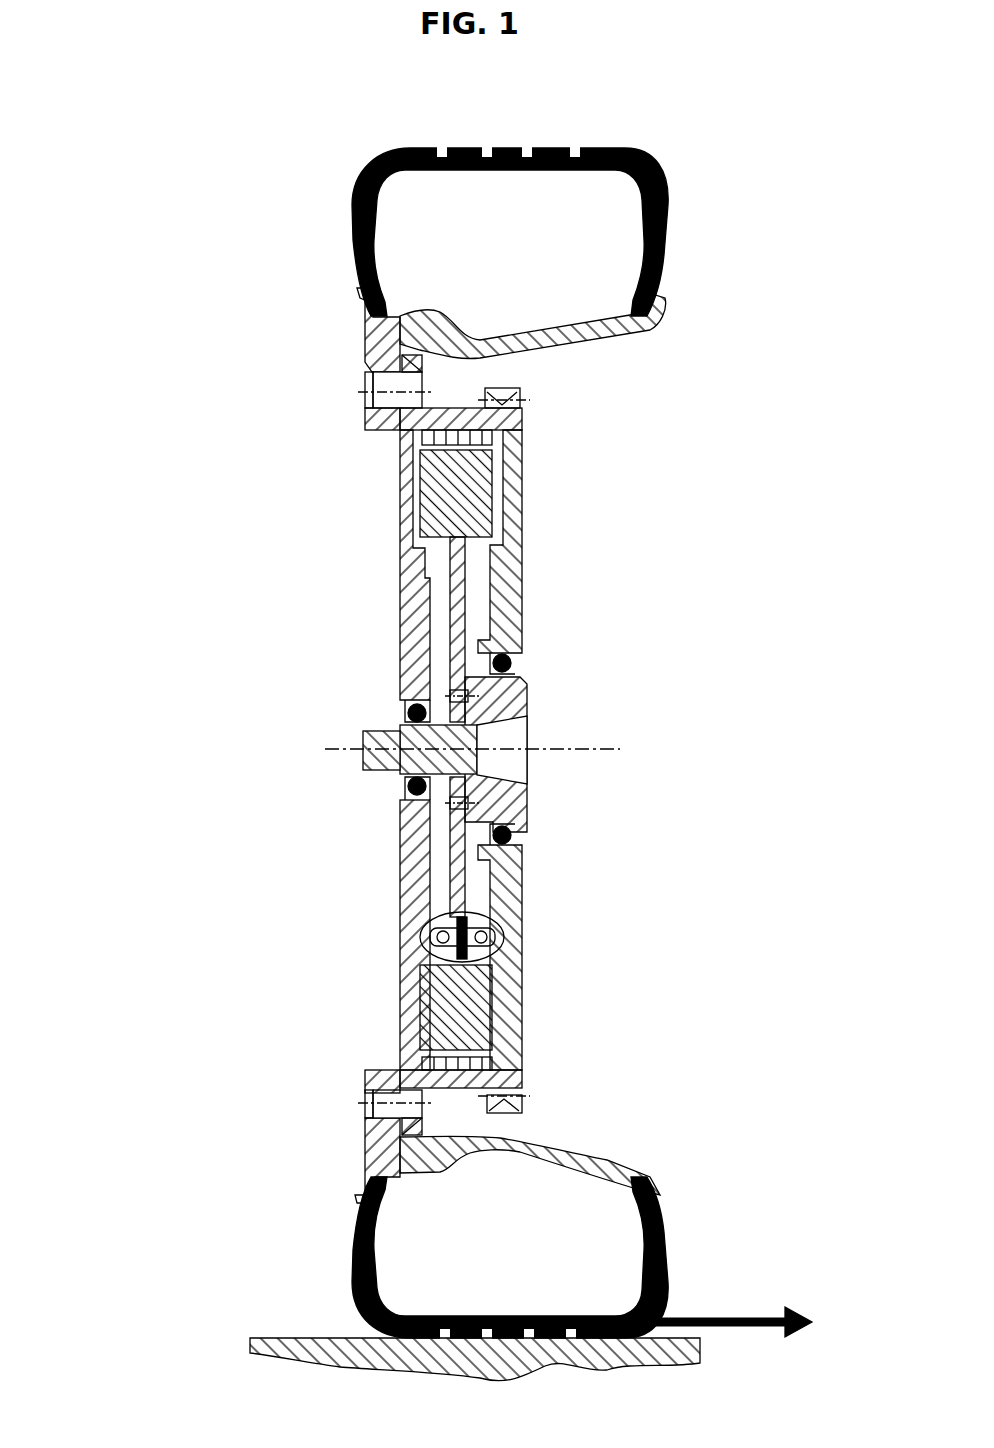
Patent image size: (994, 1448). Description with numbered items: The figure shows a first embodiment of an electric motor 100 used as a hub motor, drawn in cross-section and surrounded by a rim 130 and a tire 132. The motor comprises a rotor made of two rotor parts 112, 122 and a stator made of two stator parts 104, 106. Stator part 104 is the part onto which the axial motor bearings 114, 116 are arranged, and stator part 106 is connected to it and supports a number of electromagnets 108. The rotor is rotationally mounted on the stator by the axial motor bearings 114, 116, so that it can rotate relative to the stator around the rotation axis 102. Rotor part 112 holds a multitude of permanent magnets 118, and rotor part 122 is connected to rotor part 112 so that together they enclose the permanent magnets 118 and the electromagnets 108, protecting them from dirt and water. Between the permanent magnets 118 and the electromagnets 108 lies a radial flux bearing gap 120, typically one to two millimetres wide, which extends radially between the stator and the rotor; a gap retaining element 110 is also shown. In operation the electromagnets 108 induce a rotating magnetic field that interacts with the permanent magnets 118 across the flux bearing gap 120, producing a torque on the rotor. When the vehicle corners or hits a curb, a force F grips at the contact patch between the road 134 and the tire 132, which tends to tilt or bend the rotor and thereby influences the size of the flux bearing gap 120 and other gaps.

The electric motor 100 is at (170, 390).
The rotation axis 102 is at (547, 748).
The stator part 104 is at (548, 702).
The stator part 106 is at (520, 872).
The electromagnets 108 is at (466, 482).
The gap retaining element 110 is at (400, 918).
The rotor part 112 is at (402, 582).
The axial motor bearing 114 is at (408, 708).
The axial motor bearing 116 is at (510, 660).
The permanent magnets 118 is at (420, 440).
The flux bearing gap 120 is at (505, 1054).
The rotor part 122 is at (520, 430).
The rim 130 is at (367, 317).
The tire 132 is at (353, 218).
The road 134 is at (350, 1340).